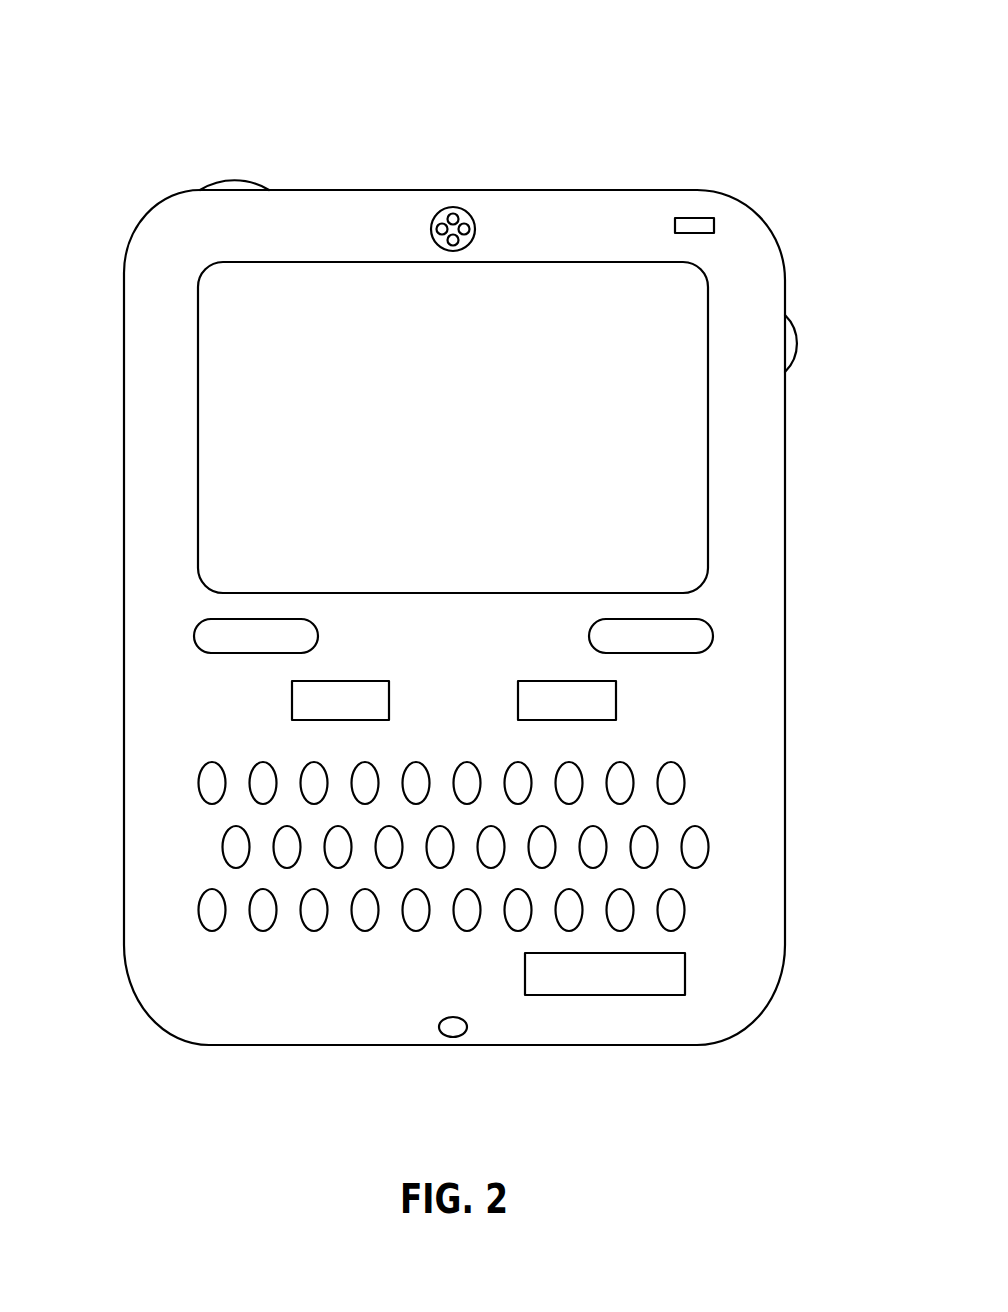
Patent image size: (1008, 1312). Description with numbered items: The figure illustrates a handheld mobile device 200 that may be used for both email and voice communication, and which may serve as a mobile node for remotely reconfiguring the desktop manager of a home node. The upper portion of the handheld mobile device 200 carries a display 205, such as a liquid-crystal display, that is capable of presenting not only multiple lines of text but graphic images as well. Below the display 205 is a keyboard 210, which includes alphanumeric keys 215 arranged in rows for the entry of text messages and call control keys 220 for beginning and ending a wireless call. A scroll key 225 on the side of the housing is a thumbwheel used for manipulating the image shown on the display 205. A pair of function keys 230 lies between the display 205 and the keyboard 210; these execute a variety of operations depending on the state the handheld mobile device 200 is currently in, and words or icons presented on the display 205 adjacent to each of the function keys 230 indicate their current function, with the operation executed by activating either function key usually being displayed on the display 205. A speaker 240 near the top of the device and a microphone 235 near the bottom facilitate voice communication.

The handheld mobile device 200 is at (202, 72).
The display 205 is at (682, 458).
The keyboard 210 is at (539, 839).
The alphanumeric keys 215 is at (715, 834).
The call control keys 220 is at (292, 698).
The scroll key 225 is at (797, 338).
The function keys 230 is at (195, 632).
The microphone 235 is at (453, 1037).
The speaker 240 is at (468, 213).